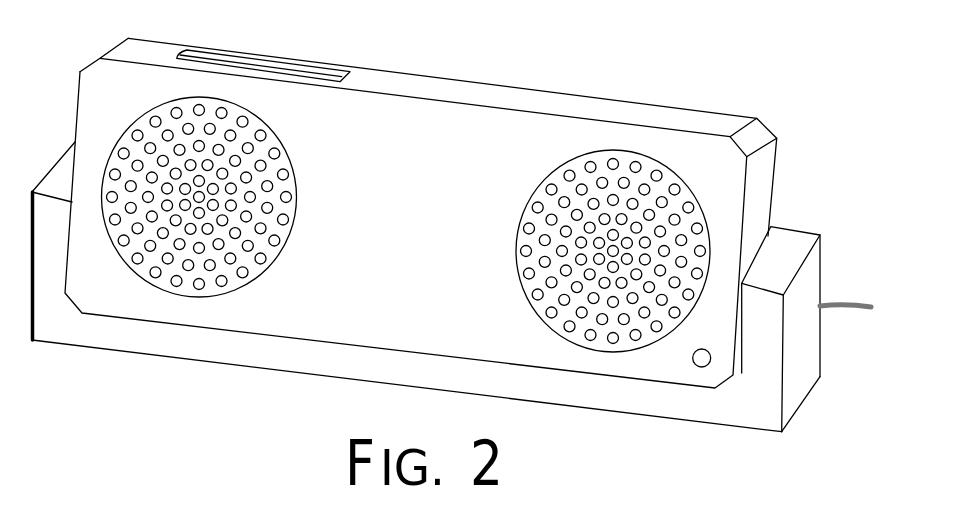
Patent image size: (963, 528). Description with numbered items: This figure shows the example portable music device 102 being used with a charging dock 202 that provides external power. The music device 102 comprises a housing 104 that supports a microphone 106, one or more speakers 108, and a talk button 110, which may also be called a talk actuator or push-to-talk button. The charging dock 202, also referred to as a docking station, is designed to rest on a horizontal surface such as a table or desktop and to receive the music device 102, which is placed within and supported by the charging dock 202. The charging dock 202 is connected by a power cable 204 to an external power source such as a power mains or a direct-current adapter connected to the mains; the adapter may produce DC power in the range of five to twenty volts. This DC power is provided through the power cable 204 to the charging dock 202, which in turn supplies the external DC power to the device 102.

The portable music device 102 is at (421, 203).
The housing 104 is at (483, 93).
The microphone 106 is at (696, 359).
The speakers 108 is at (257, 133).
The talk button 110 is at (307, 65).
The charging dock 202 is at (255, 357).
The power cable 204 is at (843, 305).